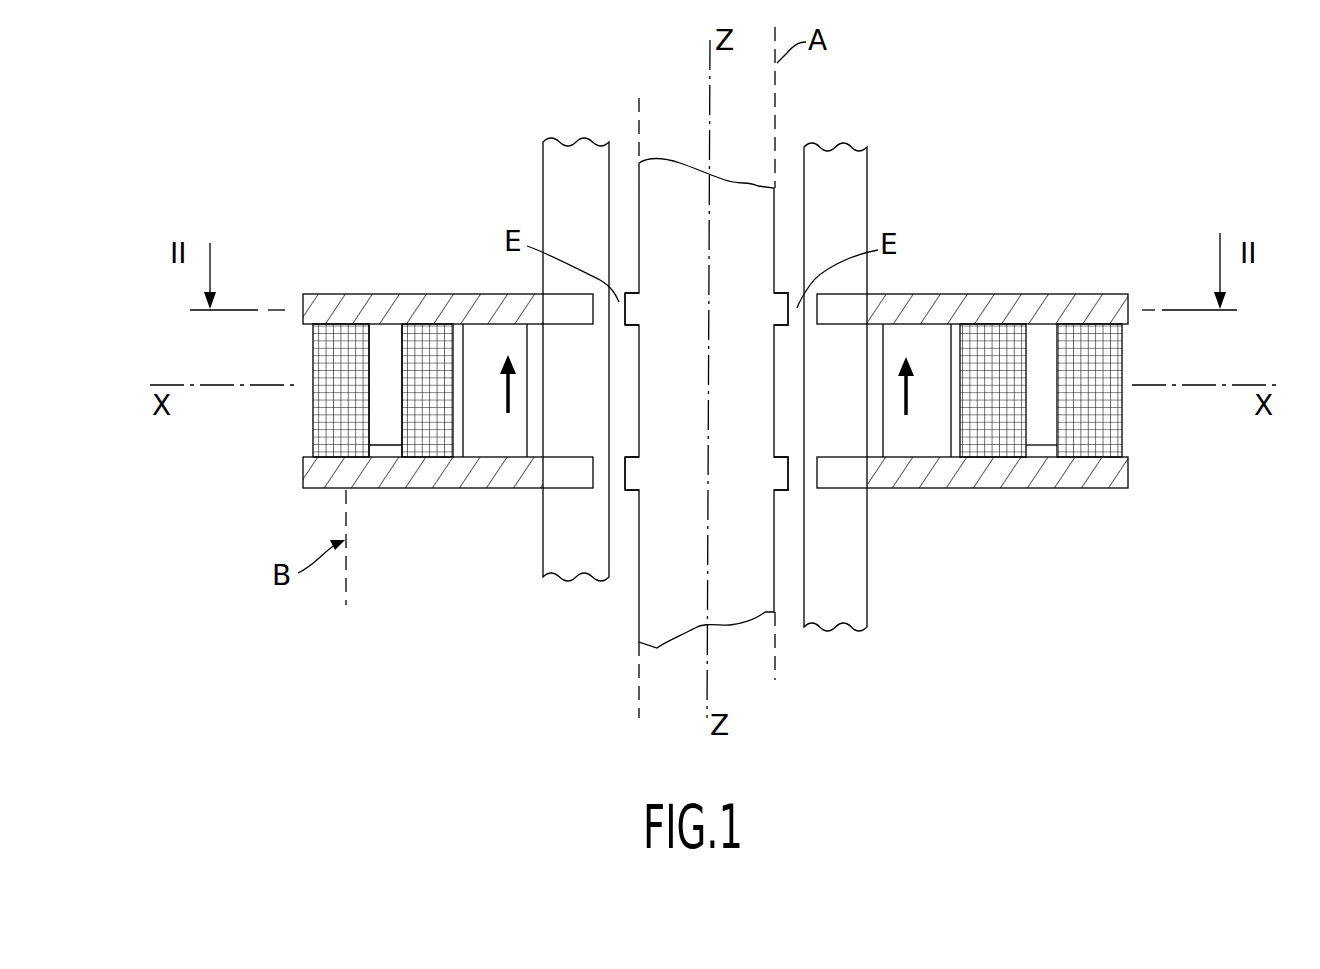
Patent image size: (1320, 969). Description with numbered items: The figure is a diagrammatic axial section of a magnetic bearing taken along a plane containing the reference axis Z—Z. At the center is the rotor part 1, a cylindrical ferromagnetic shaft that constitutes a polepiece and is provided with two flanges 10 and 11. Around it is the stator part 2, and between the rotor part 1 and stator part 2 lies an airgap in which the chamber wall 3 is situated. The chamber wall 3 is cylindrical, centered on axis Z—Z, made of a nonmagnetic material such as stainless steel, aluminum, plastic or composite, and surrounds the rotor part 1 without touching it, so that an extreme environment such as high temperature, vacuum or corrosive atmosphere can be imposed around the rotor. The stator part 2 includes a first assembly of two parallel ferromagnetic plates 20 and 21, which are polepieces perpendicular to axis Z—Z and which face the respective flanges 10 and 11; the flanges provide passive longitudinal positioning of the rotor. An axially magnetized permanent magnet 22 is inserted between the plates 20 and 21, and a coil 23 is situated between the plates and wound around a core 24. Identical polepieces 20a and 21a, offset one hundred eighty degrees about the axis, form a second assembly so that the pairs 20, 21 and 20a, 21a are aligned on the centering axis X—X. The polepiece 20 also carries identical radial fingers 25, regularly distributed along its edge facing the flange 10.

The rotor part 1 is at (669, 128).
The stator part 2 is at (419, 374).
The chamber wall 3 is at (543, 182).
The flange 10 is at (630, 312).
The flange 11 is at (630, 476).
The first ferromagnetic plate 20 is at (470, 307).
The first ferromagnetic plate 21 is at (315, 478).
The polepiece 20a is at (985, 308).
The polepiece 21a is at (978, 480).
The permanent magnet 22 is at (517, 445).
The coil 23 is at (325, 370).
The core 24 is at (387, 342).
The radial fingers 25 is at (380, 453).